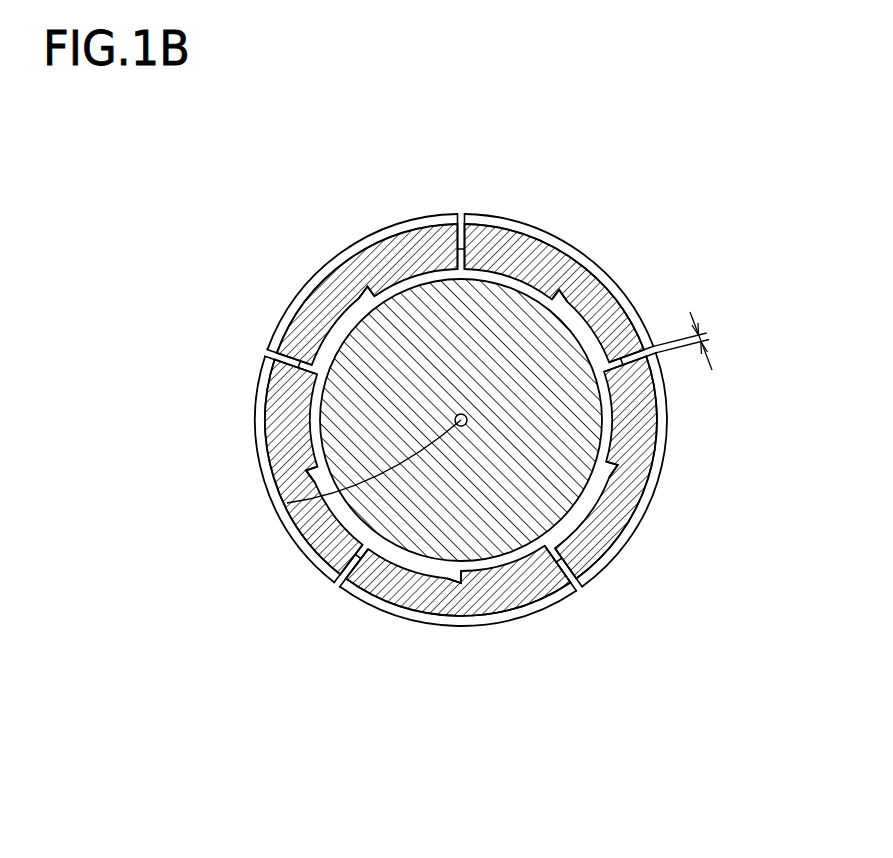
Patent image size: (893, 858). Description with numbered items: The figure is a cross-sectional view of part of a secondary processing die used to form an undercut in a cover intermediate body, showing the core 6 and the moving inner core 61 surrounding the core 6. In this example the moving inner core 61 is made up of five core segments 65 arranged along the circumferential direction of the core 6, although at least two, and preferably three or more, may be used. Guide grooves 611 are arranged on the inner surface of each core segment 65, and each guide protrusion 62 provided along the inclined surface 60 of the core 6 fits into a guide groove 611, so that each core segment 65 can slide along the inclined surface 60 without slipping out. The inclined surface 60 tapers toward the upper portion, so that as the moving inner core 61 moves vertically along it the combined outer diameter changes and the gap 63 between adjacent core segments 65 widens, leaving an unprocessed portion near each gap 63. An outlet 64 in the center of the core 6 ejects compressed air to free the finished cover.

The core 6 is at (380, 345).
The inclined surface 60 is at (596, 333).
The moving inner core 61 is at (631, 405).
The guide groove 611 is at (614, 468).
The guide protrusion 62 is at (593, 532).
The gap 63 is at (713, 340).
The outlet 64 is at (287, 503).
The core segment 65 is at (357, 272).